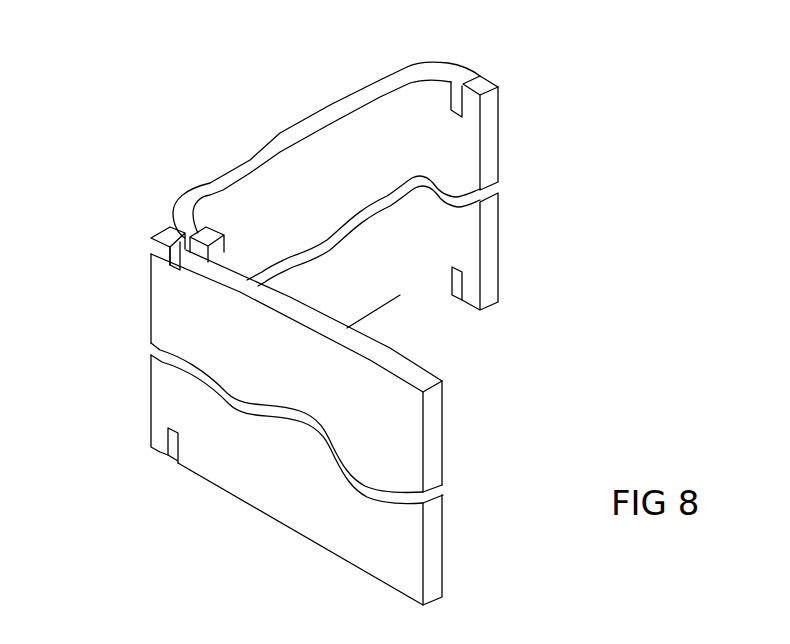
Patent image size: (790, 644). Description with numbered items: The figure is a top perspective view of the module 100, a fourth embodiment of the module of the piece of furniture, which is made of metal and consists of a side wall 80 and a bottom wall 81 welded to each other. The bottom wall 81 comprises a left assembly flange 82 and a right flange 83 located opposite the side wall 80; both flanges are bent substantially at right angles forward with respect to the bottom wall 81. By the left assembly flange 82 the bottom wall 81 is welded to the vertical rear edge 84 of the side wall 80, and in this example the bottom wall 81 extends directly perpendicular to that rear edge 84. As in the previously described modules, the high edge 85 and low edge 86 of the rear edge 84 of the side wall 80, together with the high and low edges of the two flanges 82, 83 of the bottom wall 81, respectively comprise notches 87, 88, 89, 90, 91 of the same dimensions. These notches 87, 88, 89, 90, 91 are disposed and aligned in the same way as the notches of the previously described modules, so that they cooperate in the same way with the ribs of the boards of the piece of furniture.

The side wall 80 is at (233, 463).
The bottom wall 81 is at (400, 295).
The left assembly flange 82 is at (233, 233).
The right flange 83 is at (466, 68).
The rear edge 84 is at (168, 312).
The high edge 85 is at (413, 448).
The low edge 86 is at (330, 515).
The notch 87 is at (153, 263).
The notch 88 is at (160, 458).
The notch 89 is at (195, 208).
The notch 90 is at (483, 73).
The notch 91 is at (373, 293).
The module 100 is at (523, 149).